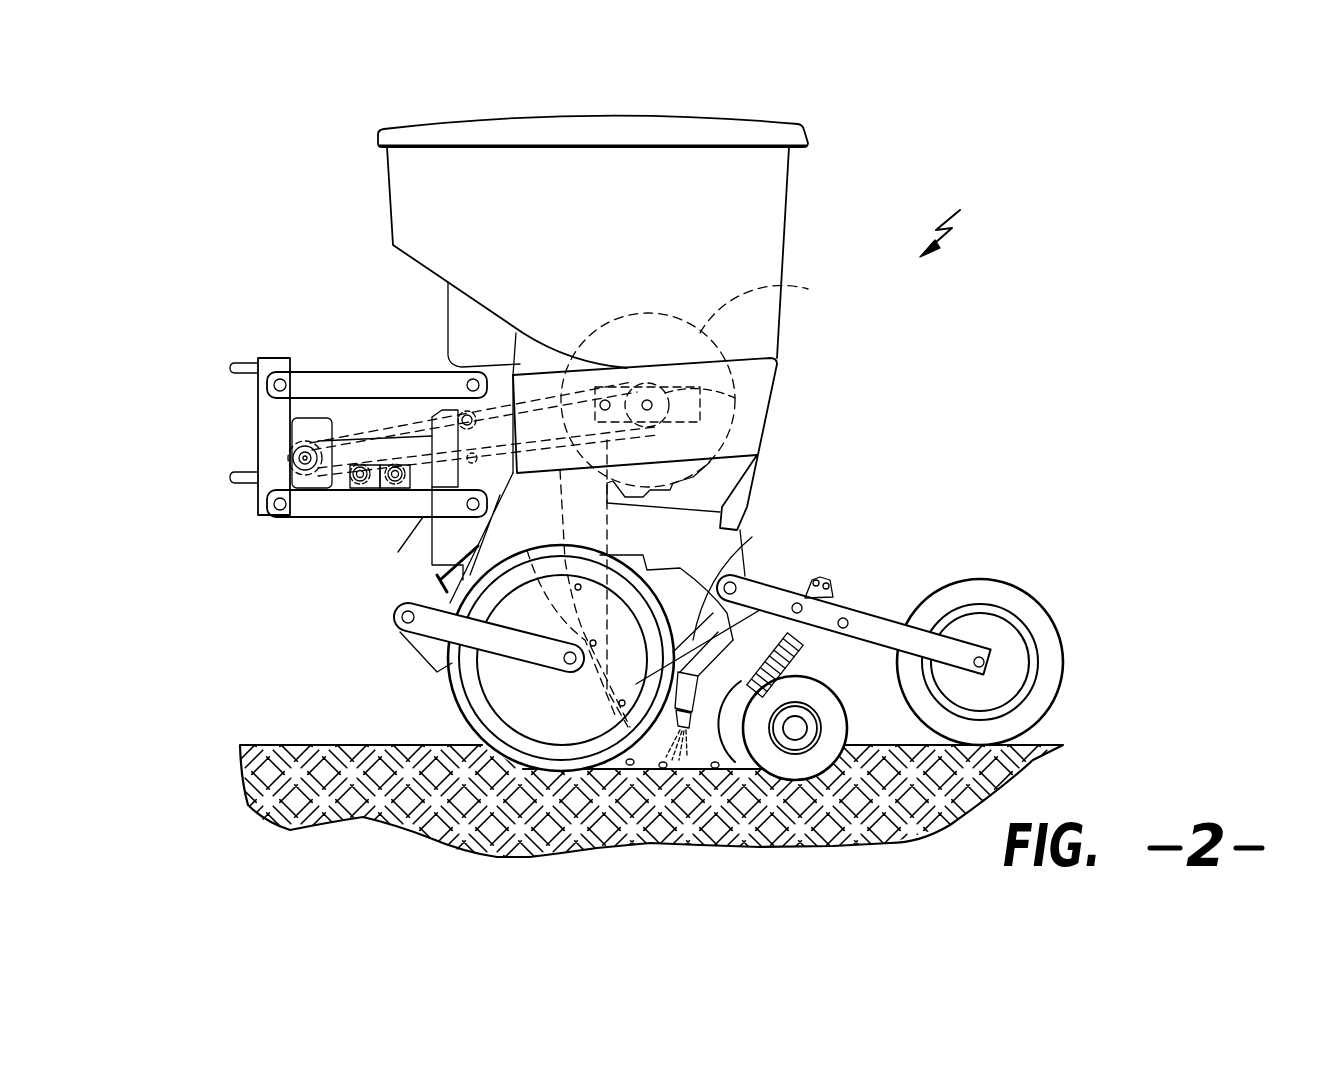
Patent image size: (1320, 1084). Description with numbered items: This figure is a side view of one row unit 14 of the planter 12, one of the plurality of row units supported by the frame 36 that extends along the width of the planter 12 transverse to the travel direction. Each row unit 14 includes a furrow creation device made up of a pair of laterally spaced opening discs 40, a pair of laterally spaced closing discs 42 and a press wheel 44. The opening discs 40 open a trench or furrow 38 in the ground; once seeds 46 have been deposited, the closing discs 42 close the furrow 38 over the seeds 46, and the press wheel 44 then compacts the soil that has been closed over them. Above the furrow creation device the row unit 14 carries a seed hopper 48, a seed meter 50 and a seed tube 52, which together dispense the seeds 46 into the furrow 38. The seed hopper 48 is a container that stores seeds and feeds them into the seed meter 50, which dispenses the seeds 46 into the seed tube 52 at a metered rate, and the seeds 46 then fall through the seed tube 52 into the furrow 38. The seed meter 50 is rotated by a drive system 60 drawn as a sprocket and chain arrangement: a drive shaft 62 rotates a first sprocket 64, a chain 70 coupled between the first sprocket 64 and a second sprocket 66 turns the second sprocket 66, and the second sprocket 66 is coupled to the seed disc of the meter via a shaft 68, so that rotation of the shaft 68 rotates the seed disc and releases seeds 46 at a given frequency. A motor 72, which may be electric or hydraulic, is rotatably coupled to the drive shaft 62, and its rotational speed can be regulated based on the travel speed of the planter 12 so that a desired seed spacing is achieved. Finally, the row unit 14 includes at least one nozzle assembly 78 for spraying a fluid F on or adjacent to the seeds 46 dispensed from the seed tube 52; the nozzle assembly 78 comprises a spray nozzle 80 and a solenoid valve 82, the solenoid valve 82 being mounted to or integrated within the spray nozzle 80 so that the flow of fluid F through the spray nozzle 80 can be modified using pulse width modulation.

The planter 12 is at (981, 216).
The row unit 14 is at (981, 216).
The frame 36 is at (317, 367).
The furrow 38 is at (632, 762).
The opening discs 40 is at (465, 712).
The closing discs 42 is at (812, 680).
The press wheel 44 is at (1000, 578).
The seeds 46 is at (528, 556).
The seed hopper 48 is at (790, 217).
The seed meter 50 is at (790, 288).
The seed tube 52 is at (608, 522).
The drive system 60 is at (397, 419).
The drive shaft 62 is at (293, 447).
The first sprocket 64 is at (327, 467).
The second sprocket 66 is at (768, 420).
The shaft 68 is at (647, 405).
The chain 70 is at (347, 433).
The motor 72 is at (303, 418).
The nozzle assembly 78 is at (745, 650).
The spray nozzle 80 is at (675, 712).
The solenoid valve 82 is at (752, 537).
The fluid F is at (667, 763).